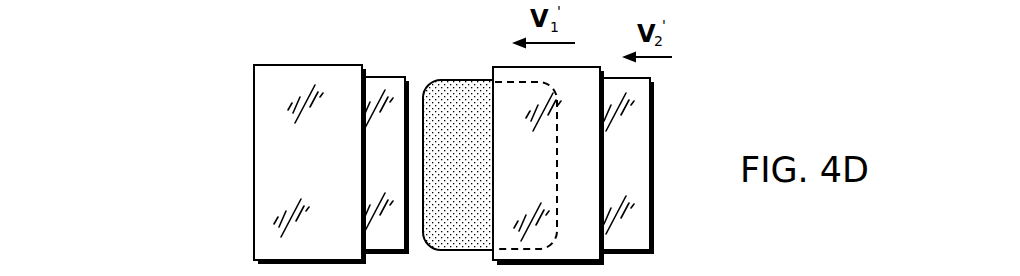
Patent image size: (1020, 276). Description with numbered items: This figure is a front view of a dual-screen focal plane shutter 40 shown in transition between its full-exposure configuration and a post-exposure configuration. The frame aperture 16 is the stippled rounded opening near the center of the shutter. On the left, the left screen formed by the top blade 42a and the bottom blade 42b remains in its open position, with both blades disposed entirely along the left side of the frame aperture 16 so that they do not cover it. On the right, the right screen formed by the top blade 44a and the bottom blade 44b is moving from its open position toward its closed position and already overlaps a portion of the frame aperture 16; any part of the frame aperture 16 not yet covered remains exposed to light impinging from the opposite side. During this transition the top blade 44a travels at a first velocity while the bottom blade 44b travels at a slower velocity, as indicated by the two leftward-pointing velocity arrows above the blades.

The dual-screen focal plane shutter 40 is at (467, 145).
The top blade 42a is at (329, 175).
The bottom blade 42b is at (388, 78).
The frame aperture 16 is at (457, 80).
The top blade 44a is at (542, 175).
The bottom blade 44b is at (652, 155).